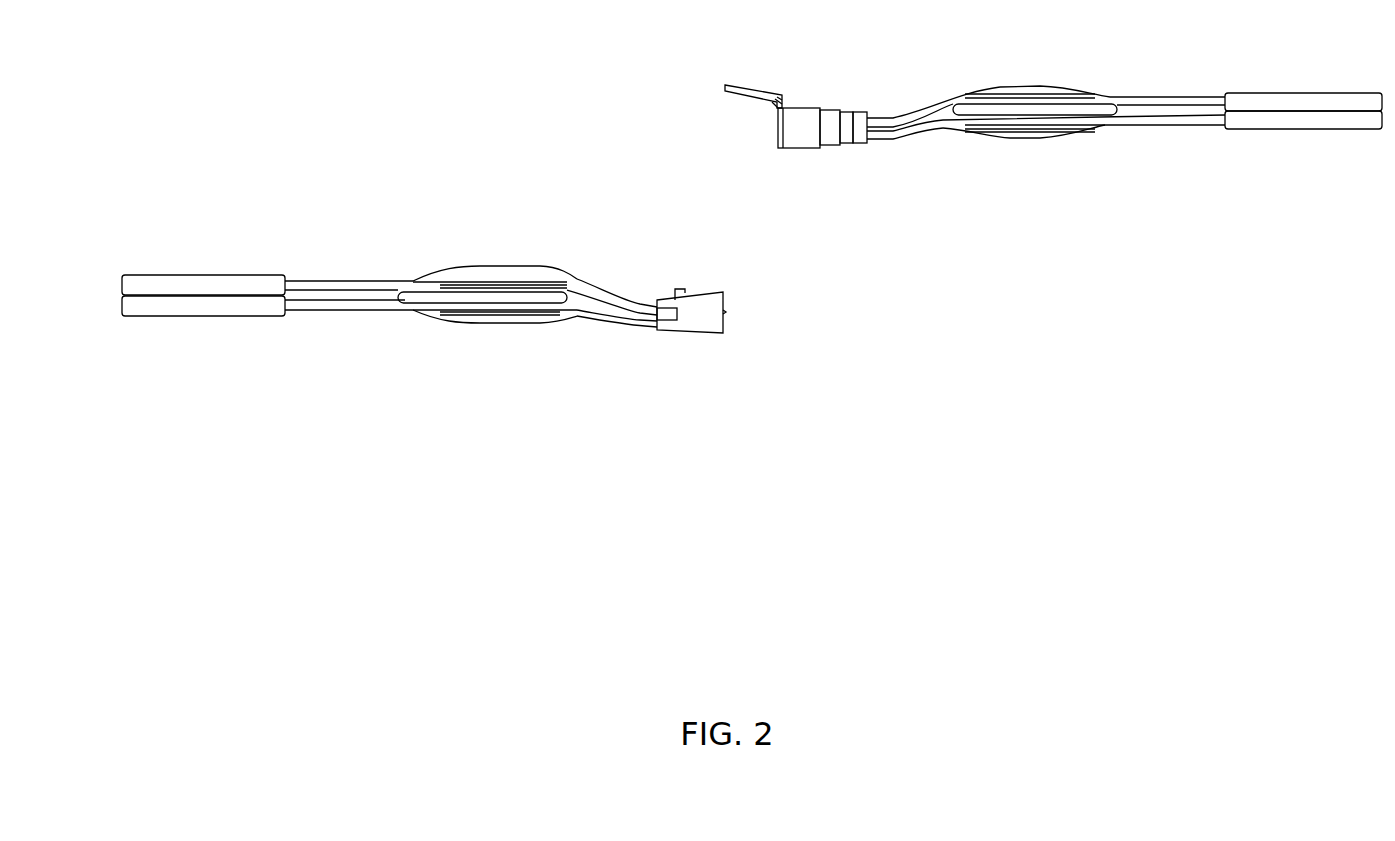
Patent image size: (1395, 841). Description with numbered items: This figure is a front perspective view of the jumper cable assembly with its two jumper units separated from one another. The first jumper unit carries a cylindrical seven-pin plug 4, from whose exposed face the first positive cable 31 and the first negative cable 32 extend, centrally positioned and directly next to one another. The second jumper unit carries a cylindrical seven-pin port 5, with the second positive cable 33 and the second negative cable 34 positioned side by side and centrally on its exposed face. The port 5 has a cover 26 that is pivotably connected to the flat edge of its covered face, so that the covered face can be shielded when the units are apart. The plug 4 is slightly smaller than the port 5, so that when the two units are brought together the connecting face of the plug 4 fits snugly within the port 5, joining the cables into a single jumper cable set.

The plug 4 is at (693, 343).
The port 5 is at (818, 160).
The cover 26 is at (738, 78).
The first positive cable 31 is at (568, 325).
The first negative cable 32 is at (584, 272).
The second positive cable 33 is at (925, 138).
The second negative cable 34 is at (902, 100).